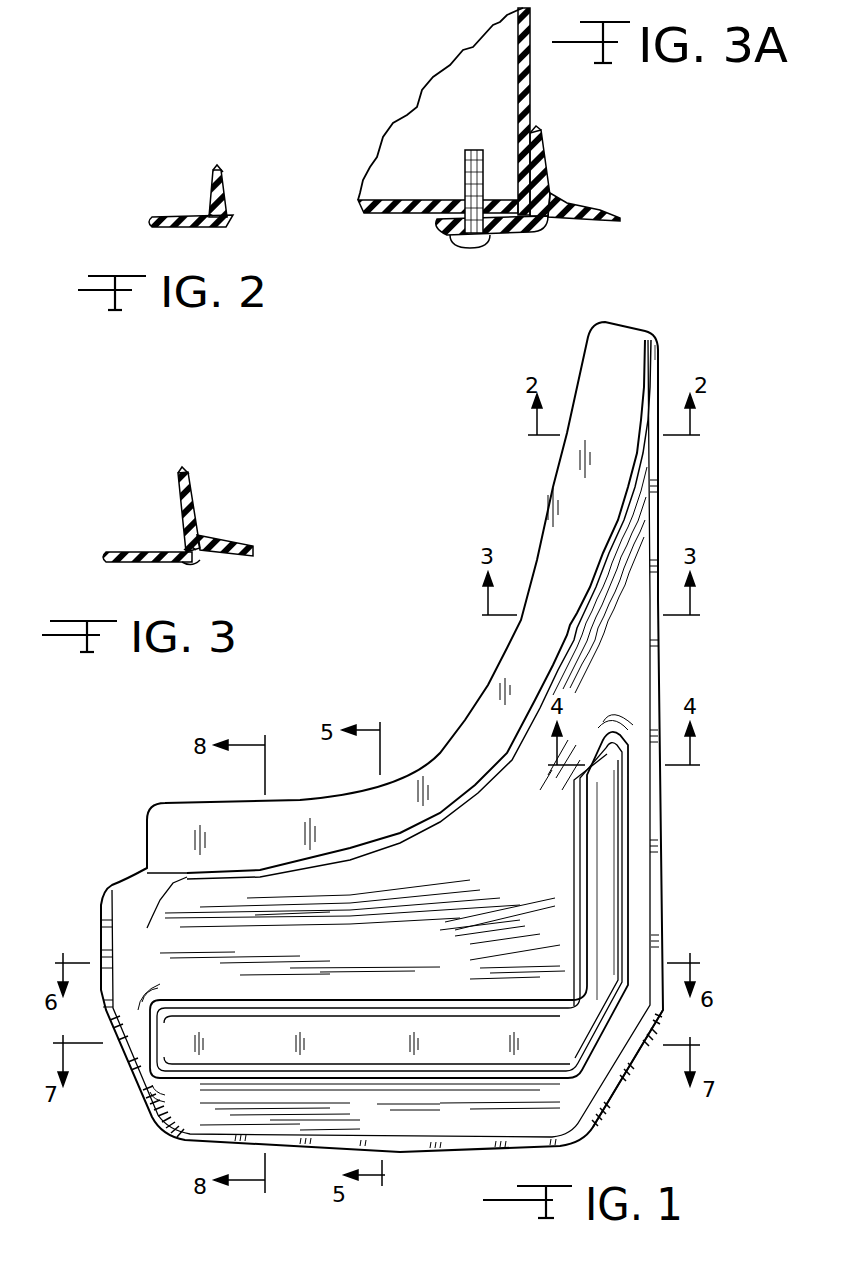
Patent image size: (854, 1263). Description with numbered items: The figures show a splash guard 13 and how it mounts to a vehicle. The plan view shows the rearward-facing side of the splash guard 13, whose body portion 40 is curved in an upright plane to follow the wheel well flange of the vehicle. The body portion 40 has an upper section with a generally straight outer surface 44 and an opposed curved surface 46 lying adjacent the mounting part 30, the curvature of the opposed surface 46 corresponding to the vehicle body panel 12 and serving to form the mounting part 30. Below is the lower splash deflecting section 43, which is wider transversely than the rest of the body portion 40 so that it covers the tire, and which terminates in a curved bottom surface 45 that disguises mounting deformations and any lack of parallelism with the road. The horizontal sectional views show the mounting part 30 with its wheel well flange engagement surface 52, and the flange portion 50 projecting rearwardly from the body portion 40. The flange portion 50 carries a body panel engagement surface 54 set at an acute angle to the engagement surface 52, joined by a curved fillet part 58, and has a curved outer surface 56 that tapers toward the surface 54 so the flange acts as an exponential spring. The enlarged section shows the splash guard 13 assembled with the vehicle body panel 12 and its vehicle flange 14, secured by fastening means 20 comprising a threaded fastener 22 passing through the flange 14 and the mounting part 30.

In FIG. 3A, the vehicle body panel 12 is at (530, 62).
In FIG. 1, the splash guard 13 is at (145, 1128).
In FIG. 3A, the vehicle flange 14 is at (432, 215).
In FIG. 3A, the fastening means 20 is at (468, 243).
In FIG. 3A, the threaded fastener 22 is at (478, 247).
In FIG. 1, the mounting part 30 is at (185, 815).
In FIG. 2, the mounting part 30 is at (179, 172).
In FIG. 3, the mounting part 30 is at (168, 511).
In FIG. 3A, the mounting part 30 is at (560, 224).
In FIG. 1, the body portion 40 is at (177, 947).
In FIG. 1, the lower splash deflecting section 43 is at (666, 821).
In FIG. 3, the outer surface 44 is at (227, 538).
In FIG. 1, the curved bottom surface 45 is at (645, 1042).
In FIG. 3, the opposed curved surface 46 is at (200, 562).
In FIG. 1, the flange portion 50 is at (626, 524).
In FIG. 3, the flange portion 50 is at (168, 511).
In FIG. 3A, the flange portion 50 is at (544, 184).
In FIG. 2, the wheel well flange engagement surface 52 is at (160, 215).
In FIG. 3, the wheel well flange engagement surface 52 is at (122, 550).
In FIG. 2, the body panel engagement surface 54 is at (214, 172).
In FIG. 3, the body panel engagement surface 54 is at (178, 478).
In FIG. 2, the outer surface of the flange portion 56 is at (223, 172).
In FIG. 3, the outer surface of the flange portion 56 is at (196, 494).
In FIG. 3A, the outer surface of the flange portion 56 is at (545, 162).
In FIG. 2, the curved fillet part 58 is at (207, 215).
In FIG. 3, the curved fillet part 58 is at (187, 547).